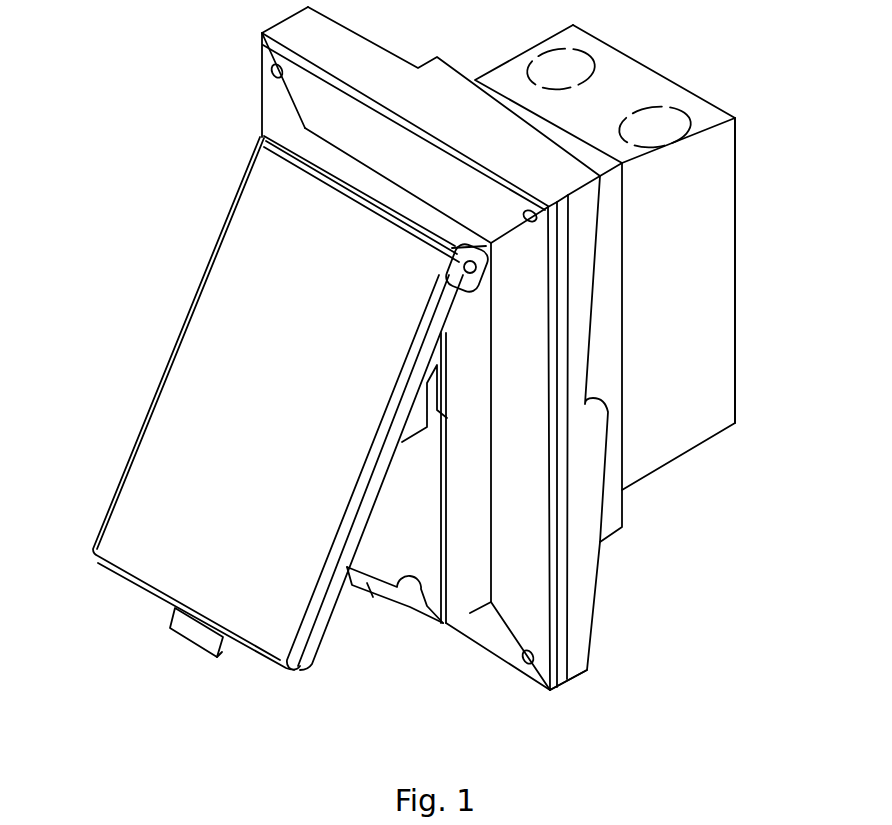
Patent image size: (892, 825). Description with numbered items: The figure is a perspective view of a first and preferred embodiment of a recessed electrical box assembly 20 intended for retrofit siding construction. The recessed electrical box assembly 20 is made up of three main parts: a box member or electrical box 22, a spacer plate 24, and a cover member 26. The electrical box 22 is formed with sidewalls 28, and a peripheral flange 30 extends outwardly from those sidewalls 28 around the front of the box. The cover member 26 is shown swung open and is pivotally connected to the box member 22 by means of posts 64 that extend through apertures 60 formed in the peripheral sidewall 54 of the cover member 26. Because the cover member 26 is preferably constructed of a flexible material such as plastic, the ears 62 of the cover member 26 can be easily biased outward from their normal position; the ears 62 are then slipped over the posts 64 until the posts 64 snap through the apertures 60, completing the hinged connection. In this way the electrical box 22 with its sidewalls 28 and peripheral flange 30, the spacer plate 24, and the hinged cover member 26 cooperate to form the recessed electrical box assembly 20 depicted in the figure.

The recessed electrical box assembly 20 is at (130, 146).
The electrical box 22 is at (735, 118).
The spacer plate 24 is at (585, 447).
The cover member 26 is at (269, 352).
The sidewalls 28 is at (660, 307).
The peripheral flange 30 is at (510, 465).
The peripheral sidewall 54 is at (377, 460).
The apertures 60 is at (440, 270).
The ears 62 is at (485, 243).
The posts 64 is at (479, 283).